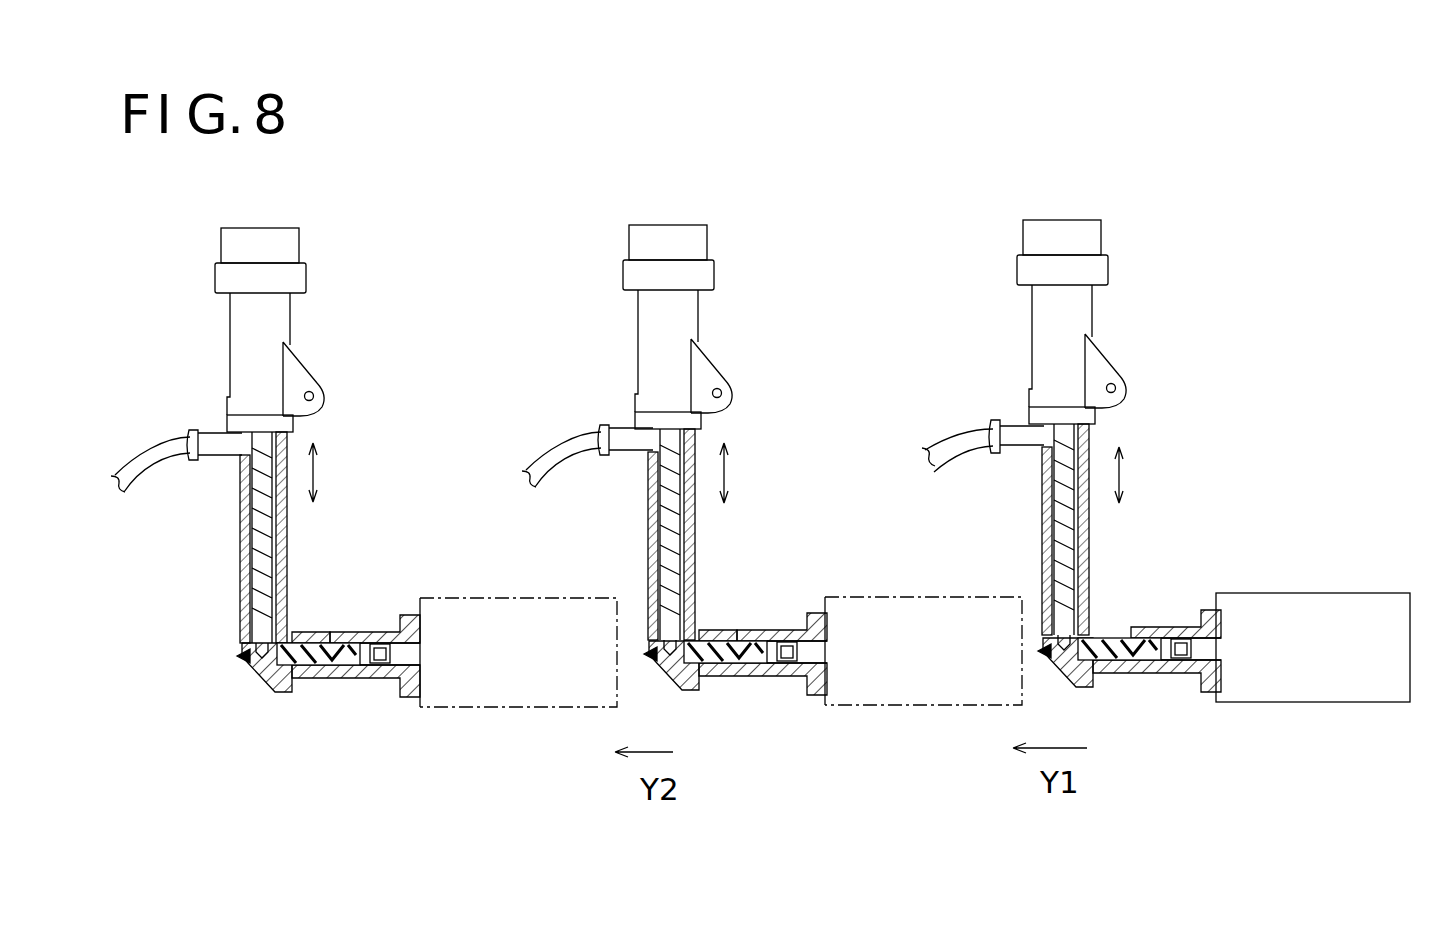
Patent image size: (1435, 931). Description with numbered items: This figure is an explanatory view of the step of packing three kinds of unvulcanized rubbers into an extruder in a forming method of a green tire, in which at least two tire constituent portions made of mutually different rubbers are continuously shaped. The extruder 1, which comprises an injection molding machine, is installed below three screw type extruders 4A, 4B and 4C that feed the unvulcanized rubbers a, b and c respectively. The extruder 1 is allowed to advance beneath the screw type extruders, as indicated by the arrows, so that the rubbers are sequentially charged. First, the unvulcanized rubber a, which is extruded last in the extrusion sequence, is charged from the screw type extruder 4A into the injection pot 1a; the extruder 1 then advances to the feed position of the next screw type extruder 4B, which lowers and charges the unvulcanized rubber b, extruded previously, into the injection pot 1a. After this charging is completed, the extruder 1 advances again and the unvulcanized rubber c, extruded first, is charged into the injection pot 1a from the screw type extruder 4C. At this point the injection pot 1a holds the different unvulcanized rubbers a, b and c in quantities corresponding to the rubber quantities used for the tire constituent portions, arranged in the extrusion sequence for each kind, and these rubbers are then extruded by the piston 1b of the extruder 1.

The extruder 1 is at (527, 700).
The injection pot 1a is at (333, 672).
The piston 1b is at (408, 660).
The screw type extruder 4A is at (1084, 309).
The screw type extruder 4B is at (690, 314).
The screw type extruder 4C is at (282, 317).
The unvulcanized rubber a is at (360, 637).
The unvulcanized rubber b is at (303, 632).
The unvulcanized rubber c is at (258, 684).